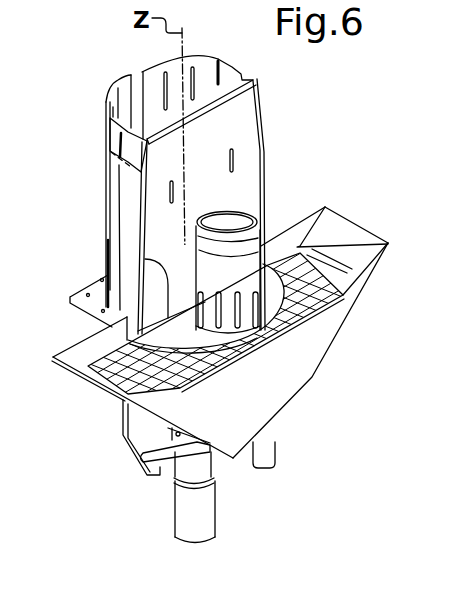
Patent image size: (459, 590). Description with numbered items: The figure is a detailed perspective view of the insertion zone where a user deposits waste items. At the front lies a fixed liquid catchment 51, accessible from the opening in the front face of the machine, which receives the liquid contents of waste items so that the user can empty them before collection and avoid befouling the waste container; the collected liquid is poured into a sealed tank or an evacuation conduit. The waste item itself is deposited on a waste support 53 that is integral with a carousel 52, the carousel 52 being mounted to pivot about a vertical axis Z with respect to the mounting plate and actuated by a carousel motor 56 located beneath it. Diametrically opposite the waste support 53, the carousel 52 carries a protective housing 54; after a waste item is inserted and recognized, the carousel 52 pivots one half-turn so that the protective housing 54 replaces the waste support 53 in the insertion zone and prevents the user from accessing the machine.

The liquid catchment 51 is at (363, 250).
The carousel 52 is at (145, 259).
The waste support 53 is at (264, 250).
The protective housing 54 is at (120, 135).
The carousel motor 56 is at (205, 503).